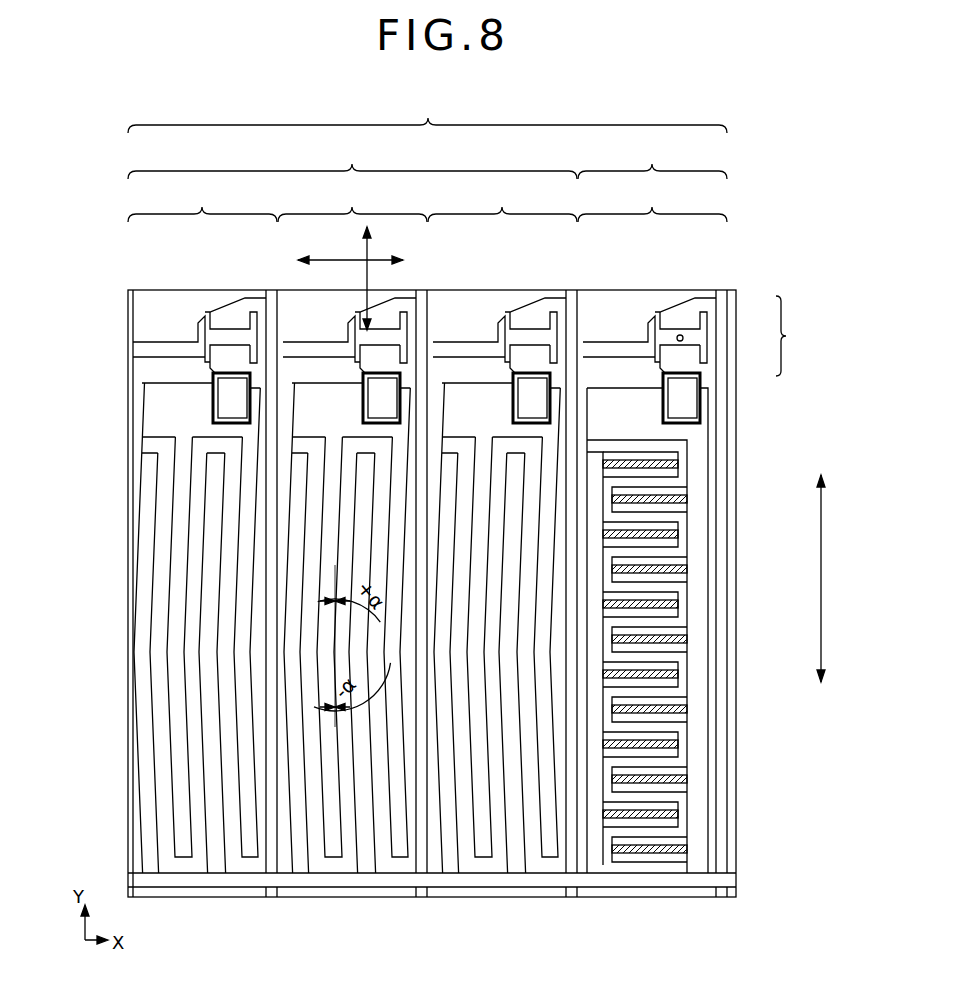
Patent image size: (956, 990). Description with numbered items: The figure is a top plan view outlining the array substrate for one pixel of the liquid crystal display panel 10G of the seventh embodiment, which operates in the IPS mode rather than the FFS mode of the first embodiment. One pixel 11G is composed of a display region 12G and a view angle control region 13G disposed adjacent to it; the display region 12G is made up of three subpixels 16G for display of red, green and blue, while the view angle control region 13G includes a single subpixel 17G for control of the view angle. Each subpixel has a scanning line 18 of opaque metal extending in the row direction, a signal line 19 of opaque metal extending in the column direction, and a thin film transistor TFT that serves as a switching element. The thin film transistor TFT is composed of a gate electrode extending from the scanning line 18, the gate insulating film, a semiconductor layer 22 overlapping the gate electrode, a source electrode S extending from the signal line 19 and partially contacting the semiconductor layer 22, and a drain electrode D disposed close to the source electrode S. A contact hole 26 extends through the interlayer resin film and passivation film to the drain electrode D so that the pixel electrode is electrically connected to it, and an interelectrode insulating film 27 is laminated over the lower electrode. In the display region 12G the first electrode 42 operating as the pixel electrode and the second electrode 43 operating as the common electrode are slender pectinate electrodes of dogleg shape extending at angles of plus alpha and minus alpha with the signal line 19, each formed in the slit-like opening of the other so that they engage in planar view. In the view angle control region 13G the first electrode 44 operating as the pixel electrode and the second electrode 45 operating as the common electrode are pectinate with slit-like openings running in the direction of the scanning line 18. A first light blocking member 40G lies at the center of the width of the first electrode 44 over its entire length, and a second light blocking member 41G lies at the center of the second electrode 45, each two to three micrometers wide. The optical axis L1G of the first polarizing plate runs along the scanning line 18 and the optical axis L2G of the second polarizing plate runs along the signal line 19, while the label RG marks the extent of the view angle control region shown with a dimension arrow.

The liquid crystal display panel 10G is at (104, 109).
The pixel 11G is at (427, 112).
The display region 12G is at (352, 158).
The view angle control region 13G is at (652, 158).
The subpixel for display 16G is at (352, 201).
The subpixel for control of a view angle 17G is at (652, 201).
The scanning line 18 is at (162, 342).
The signal line 19 is at (721, 447).
The semiconductor layer 22 is at (684, 338).
The contact hole 26 is at (688, 400).
The interelectrode insulating film 27 is at (676, 762).
The first light blocking member 40G is at (676, 708).
The second light blocking member 41G is at (672, 535).
The first electrode 42 is at (180, 768).
The second electrode 43 is at (148, 706).
The first electrode 44 is at (677, 852).
The second electrode 45 is at (673, 612).
The source electrode S is at (687, 322).
The drain electrode D is at (690, 352).
The thin film transistor TFT is at (803, 336).
The optical axis of the first polarizing plate L1G is at (350, 249).
The optical axis of the second polarizing plate L2G is at (357, 278).
The reflective region RG is at (808, 578).